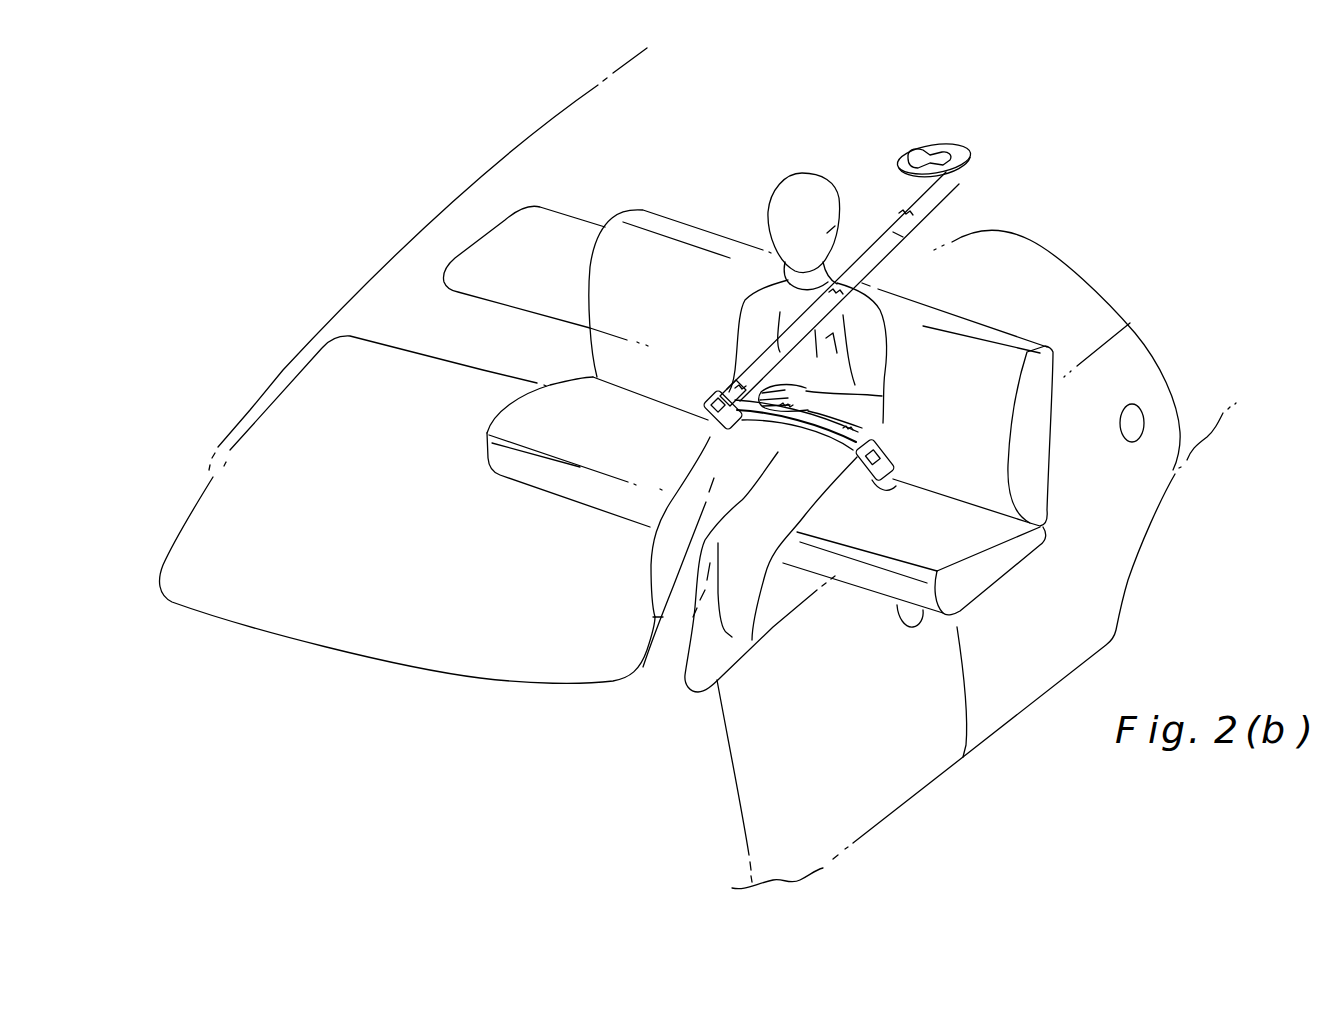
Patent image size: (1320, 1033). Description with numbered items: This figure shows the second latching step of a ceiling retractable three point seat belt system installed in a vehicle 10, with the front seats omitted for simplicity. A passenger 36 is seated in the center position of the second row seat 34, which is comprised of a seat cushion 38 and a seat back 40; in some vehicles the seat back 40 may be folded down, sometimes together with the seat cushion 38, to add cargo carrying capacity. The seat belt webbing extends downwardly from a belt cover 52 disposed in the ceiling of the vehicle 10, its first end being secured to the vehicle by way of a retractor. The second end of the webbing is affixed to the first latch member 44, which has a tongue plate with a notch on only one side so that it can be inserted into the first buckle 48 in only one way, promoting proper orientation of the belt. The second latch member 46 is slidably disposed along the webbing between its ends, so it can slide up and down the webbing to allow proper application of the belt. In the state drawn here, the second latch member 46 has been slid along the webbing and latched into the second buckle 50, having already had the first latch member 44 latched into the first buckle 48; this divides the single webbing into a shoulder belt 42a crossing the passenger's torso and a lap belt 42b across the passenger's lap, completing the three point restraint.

The vehicle 10 is at (421, 191).
The second row seat 34 is at (471, 407).
The passenger 36 is at (802, 177).
The seat cushion 38 is at (973, 530).
The seat back 40 is at (638, 250).
The shoulder belt 42a is at (903, 235).
The lap belt 42b is at (816, 441).
The first latch member 44 is at (893, 441).
The second latch member 46 is at (722, 391).
The first buckle 48 is at (891, 446).
The second buckle 50 is at (703, 420).
The belt cover 52 is at (968, 152).